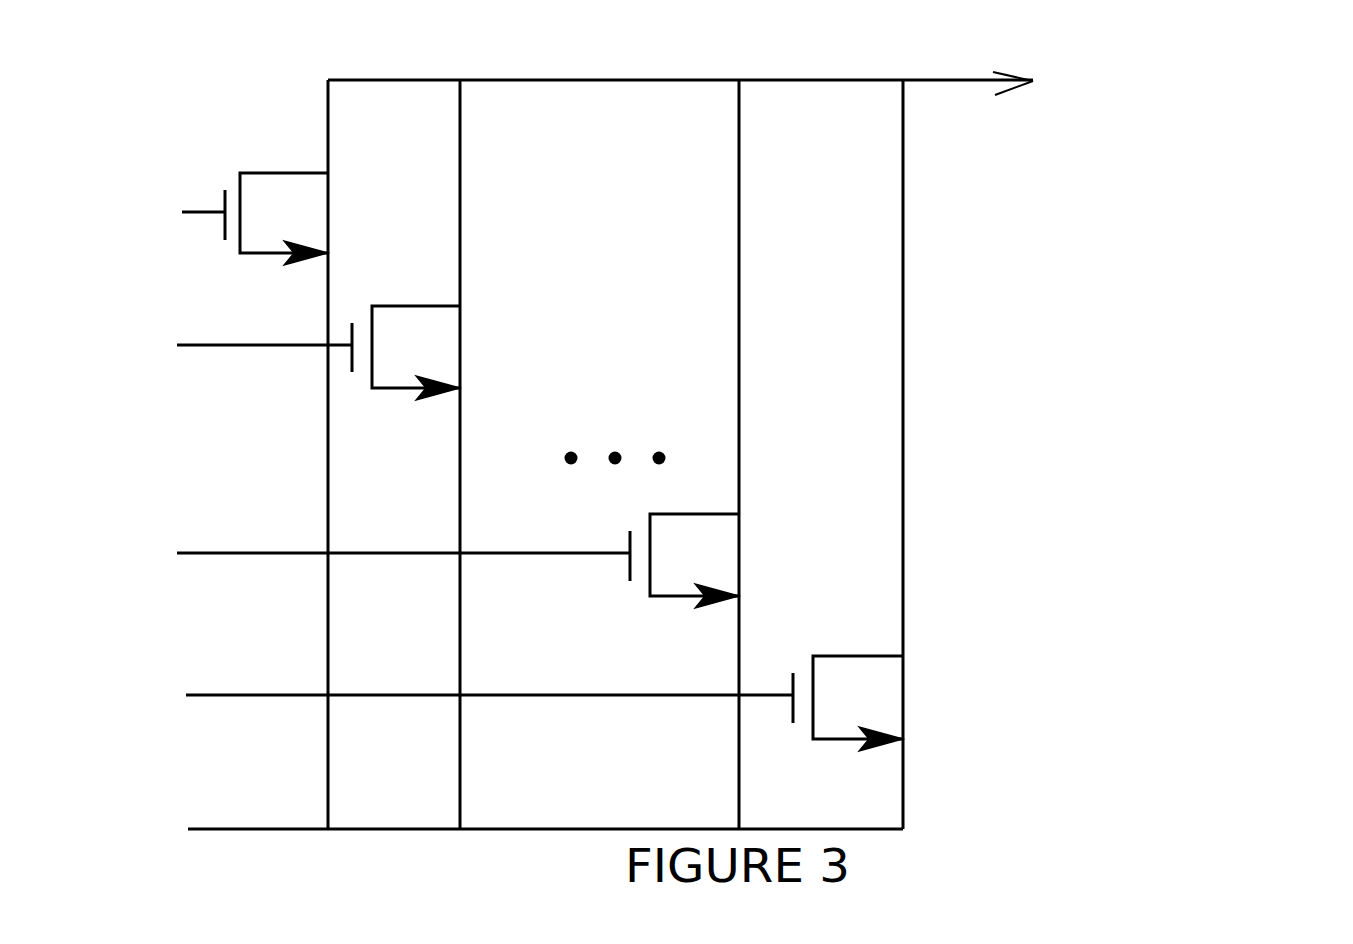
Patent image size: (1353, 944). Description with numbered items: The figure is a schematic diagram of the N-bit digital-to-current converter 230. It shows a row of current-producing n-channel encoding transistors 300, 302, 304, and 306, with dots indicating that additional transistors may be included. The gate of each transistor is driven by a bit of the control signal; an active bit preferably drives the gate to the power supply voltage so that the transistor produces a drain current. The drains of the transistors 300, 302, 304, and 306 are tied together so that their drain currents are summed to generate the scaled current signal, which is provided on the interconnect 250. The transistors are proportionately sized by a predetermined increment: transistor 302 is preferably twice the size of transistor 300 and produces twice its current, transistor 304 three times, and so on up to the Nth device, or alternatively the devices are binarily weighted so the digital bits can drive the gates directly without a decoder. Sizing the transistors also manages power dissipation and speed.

The N-bit digital-to-current converter 230 is at (956, 302).
The interconnect 250 is at (943, 81).
The encoding transistor 300 is at (252, 140).
The encoding transistor 302 is at (404, 274).
The encoding transistor 304 is at (667, 633).
The encoding transistor 306 is at (818, 768).